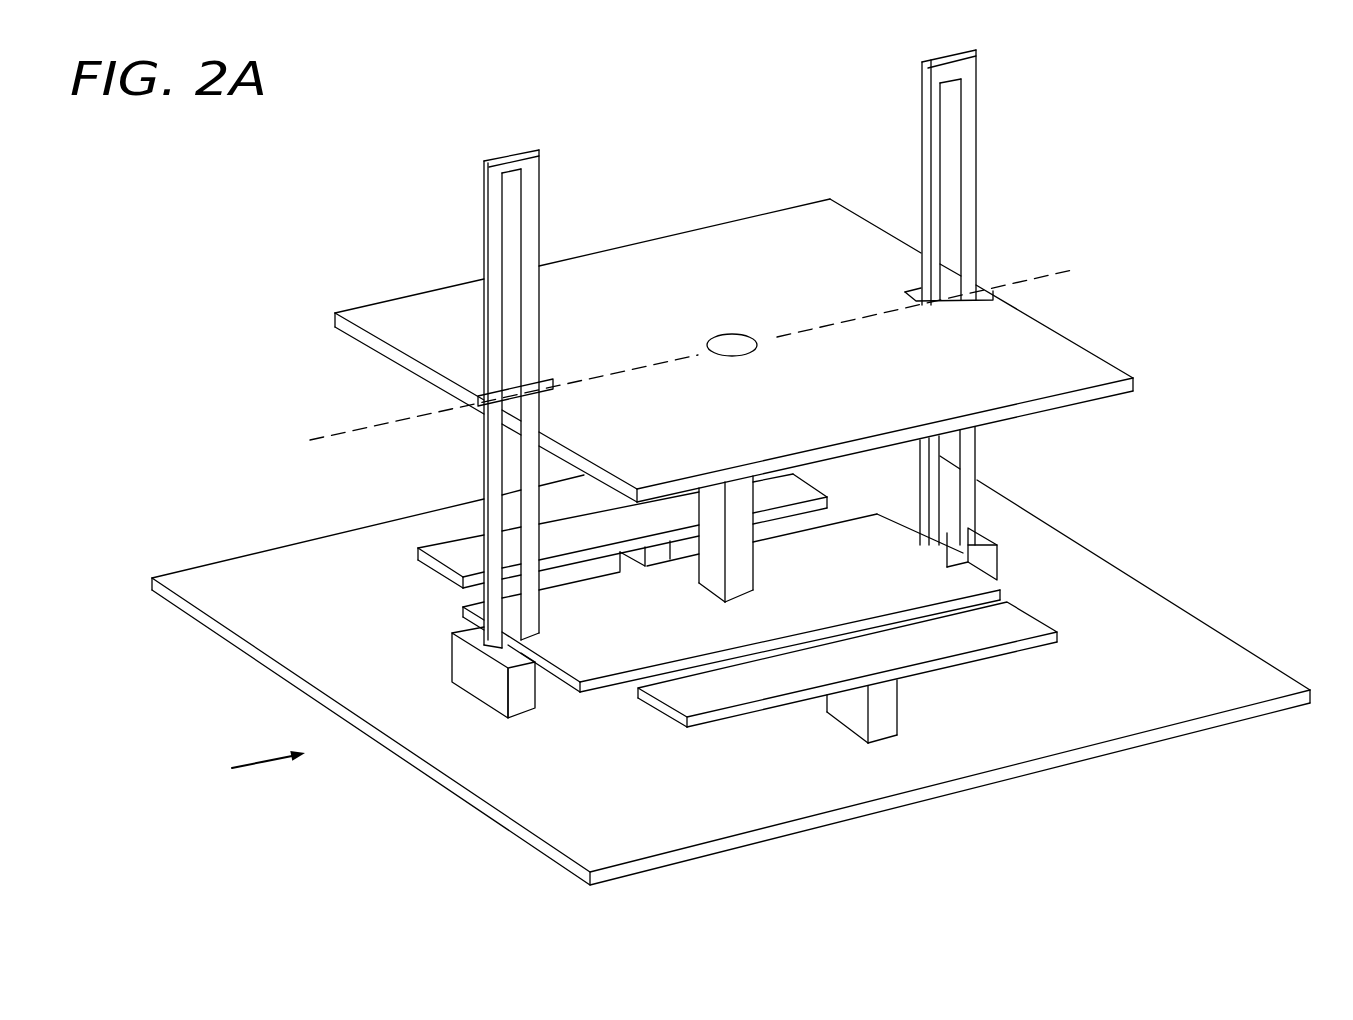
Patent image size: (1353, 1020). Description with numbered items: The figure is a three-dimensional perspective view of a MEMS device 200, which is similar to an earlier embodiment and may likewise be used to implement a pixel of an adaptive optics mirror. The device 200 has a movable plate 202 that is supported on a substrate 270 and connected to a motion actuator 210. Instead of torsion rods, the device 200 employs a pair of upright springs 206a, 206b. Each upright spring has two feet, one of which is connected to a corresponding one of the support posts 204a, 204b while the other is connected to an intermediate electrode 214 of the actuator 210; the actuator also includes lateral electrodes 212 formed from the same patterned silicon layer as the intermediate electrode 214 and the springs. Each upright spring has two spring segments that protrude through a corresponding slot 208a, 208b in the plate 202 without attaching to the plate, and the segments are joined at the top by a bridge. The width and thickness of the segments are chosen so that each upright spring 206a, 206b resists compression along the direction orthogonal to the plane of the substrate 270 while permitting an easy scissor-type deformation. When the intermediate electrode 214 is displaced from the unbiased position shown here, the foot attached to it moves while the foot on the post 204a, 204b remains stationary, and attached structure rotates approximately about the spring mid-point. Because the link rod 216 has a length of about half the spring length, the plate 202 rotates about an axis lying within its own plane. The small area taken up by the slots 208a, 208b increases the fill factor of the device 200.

The MEMS device 200 is at (328, 895).
The movable plate 202 is at (1068, 350).
The support post 204a is at (983, 540).
The support post 204b is at (455, 660).
The upright spring 206a is at (968, 165).
The upright spring 206b is at (498, 218).
The slot 208a is at (970, 266).
The slot 208b is at (464, 428).
The motion actuator 210 is at (776, 853).
The lateral electrodes 212 is at (433, 562).
The intermediate electrode 214 is at (603, 660).
The link rod 216 is at (740, 567).
The substrate 270 is at (1178, 622).